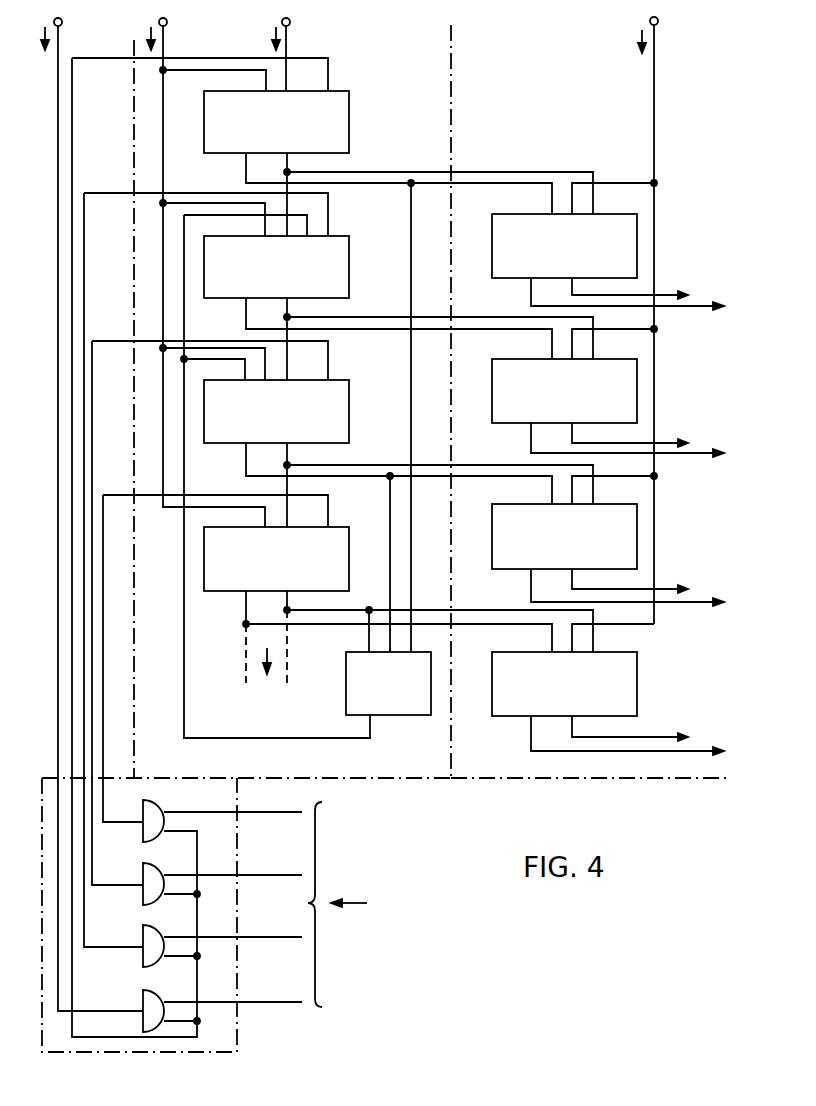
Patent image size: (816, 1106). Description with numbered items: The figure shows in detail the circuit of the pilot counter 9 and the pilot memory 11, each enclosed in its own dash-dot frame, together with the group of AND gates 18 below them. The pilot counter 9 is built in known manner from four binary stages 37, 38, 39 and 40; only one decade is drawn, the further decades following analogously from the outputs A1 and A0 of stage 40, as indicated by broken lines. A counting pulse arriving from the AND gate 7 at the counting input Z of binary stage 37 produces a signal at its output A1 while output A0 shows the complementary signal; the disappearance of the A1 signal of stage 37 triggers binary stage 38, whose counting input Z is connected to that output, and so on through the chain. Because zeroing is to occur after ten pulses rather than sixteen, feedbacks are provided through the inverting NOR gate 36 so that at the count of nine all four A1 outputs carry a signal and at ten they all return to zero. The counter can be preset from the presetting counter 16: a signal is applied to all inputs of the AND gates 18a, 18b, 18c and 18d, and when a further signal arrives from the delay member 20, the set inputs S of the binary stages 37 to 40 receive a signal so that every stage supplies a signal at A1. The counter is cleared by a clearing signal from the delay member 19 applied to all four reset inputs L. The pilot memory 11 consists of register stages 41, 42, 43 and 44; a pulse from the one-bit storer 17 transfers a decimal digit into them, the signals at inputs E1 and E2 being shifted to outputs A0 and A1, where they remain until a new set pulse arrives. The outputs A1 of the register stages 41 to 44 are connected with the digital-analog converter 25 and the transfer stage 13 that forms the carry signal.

The delay member 20 is at (92, 512).
The delay member 19 is at (206, 270).
The AND gate 7 is at (290, 52).
The 1-bit storer 17 is at (663, 318).
The binary stage 37 is at (350, 118).
The binary stage 38 is at (350, 265).
The binary stage 39 is at (350, 408).
The binary stage 40 is at (350, 557).
The inverting (NOR) gate 36 is at (346, 679).
The register stage 41 is at (638, 239).
The register stage 42 is at (638, 385).
The register stage 43 is at (638, 535).
The register stage 44 is at (638, 687).
The digital-analog converter 25 is at (647, 503).
The transfer stage 13 is at (647, 503).
The presetting counter 16 is at (519, 642).
The pilot counter 9 is at (279, 772).
The pilot memory 11 is at (498, 764).
The AND gates 18 is at (250, 1035).
The AND gate 18a is at (150, 993).
The AND gate 18b is at (150, 929).
The AND gate 18c is at (150, 867).
The AND gate 18d is at (150, 804).